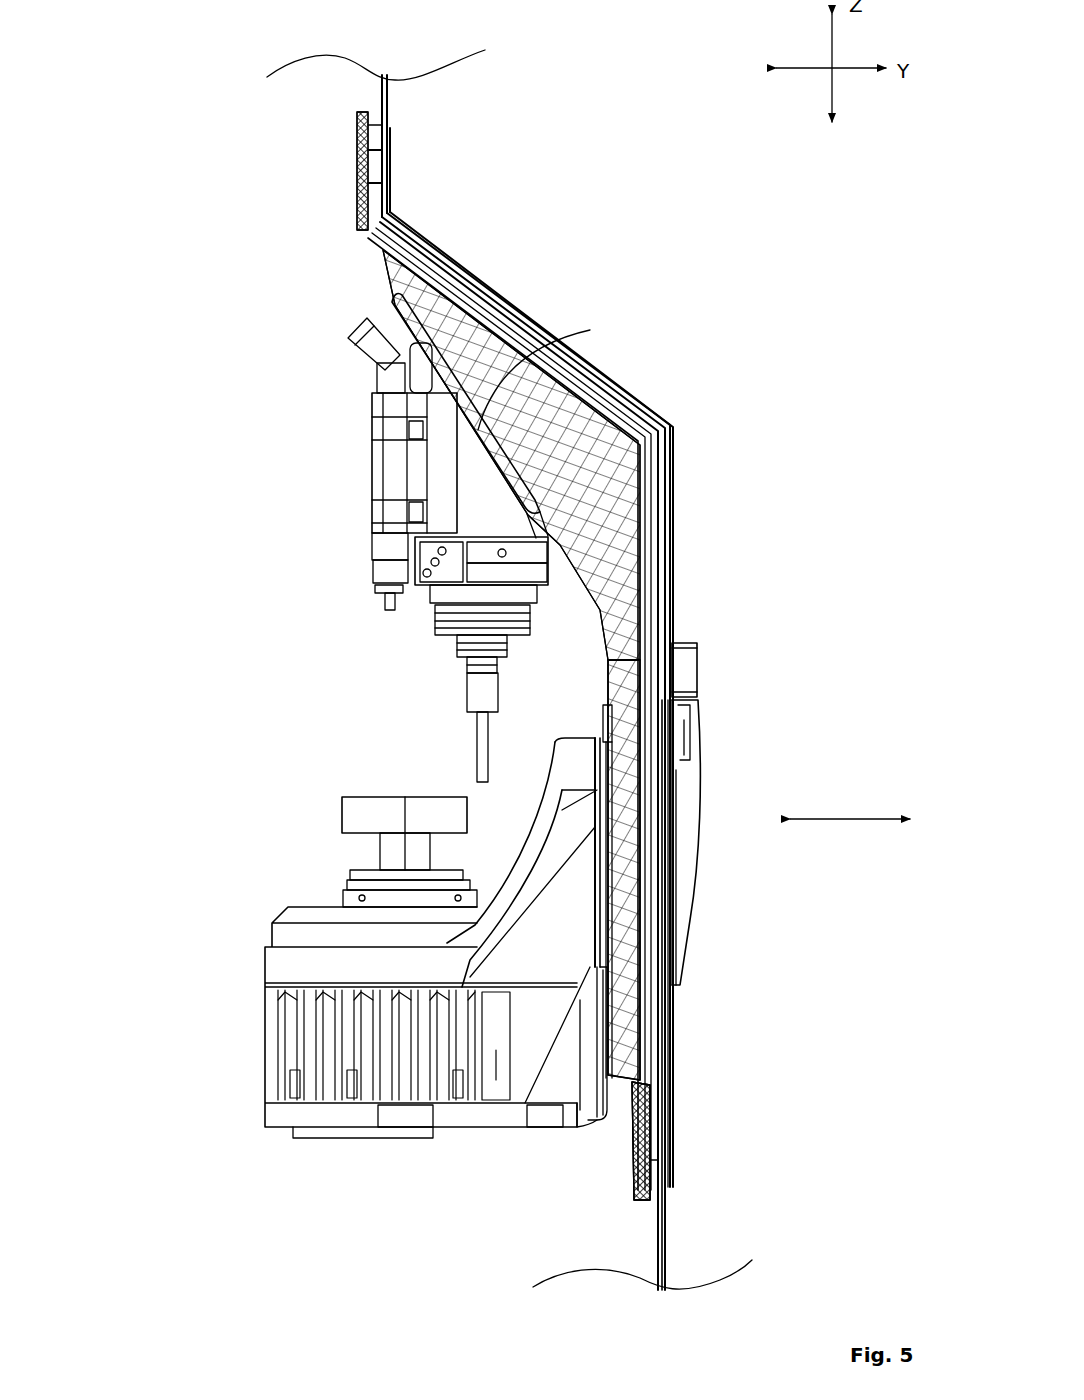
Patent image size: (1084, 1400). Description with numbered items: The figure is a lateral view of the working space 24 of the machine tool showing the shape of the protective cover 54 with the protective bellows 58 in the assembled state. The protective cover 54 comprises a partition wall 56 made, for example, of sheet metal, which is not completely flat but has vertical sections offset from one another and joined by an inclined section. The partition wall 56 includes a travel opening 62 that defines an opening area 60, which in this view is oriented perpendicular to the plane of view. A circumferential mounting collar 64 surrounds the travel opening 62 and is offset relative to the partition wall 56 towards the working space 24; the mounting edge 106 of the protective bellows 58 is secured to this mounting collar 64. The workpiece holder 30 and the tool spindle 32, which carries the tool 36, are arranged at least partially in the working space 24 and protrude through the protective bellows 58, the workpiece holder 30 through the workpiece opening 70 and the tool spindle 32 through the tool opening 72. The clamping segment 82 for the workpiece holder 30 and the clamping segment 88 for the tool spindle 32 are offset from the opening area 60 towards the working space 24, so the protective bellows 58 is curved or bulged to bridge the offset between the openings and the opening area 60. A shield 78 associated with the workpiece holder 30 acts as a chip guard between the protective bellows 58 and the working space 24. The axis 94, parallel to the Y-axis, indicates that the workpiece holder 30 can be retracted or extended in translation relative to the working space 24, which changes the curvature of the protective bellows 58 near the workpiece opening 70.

The working space 24 is at (362, 709).
The workpiece holder 30 is at (360, 873).
The tool spindle 32 is at (476, 508).
The tool 36 is at (473, 753).
The protective cover 54 is at (298, 146).
The partition wall 56 is at (667, 1218).
The protective bellows 58 is at (653, 447).
The opening area 60 is at (633, 1132).
The travel opening 62 is at (612, 648).
The mounting collar 64 is at (373, 170).
The workpiece opening 70 is at (610, 740).
The tool opening 72 is at (575, 397).
The shield 78 is at (600, 1113).
The clamping segment 82 is at (603, 830).
The clamping segment 88 is at (477, 417).
The axis 94 is at (837, 817).
The mounting edge 106 is at (377, 128).